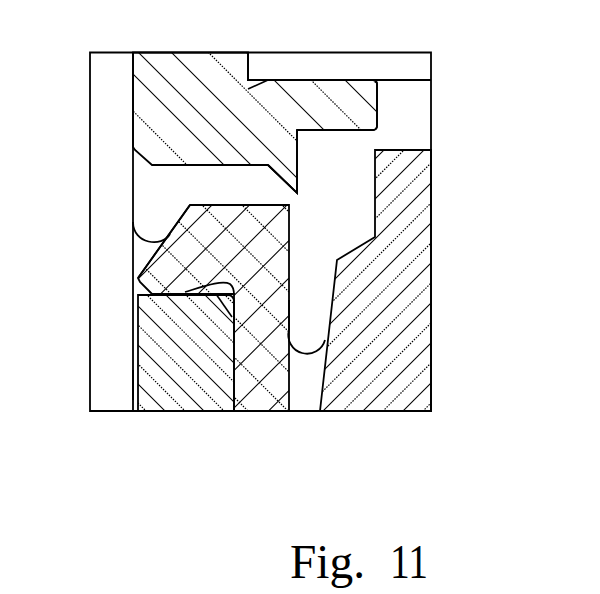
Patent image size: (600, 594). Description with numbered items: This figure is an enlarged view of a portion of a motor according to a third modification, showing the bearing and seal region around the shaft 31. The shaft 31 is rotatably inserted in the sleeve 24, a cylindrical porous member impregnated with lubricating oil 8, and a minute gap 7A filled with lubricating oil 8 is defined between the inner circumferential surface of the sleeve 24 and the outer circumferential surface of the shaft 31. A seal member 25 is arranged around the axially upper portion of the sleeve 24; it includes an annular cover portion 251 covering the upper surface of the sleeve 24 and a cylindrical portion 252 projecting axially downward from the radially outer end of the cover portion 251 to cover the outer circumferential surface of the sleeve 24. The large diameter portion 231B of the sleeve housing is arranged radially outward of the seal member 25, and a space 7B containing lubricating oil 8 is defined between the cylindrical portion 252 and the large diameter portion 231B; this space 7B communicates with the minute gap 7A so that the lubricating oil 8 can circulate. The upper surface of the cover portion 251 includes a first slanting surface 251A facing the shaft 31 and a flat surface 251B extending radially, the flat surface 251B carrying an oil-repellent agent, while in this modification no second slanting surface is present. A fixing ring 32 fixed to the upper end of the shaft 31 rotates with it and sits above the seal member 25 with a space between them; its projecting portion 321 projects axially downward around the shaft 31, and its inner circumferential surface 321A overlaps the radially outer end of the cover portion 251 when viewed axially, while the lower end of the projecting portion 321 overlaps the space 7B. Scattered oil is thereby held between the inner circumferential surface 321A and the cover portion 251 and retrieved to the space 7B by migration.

The shaft 31 is at (103, 60).
The fixing ring 32 is at (155, 58).
The projecting portion 321 is at (292, 178).
The inner circumferential surface 321A is at (277, 168).
The large diameter portion 231B is at (417, 410).
The seal member 25 is at (244, 320).
The cover portion 251 is at (244, 302).
The first slanting surface 251A is at (170, 233).
The flat surface 251B is at (193, 203).
The cylindrical portion 252 is at (187, 460).
The sleeve 24 is at (162, 409).
The lubricating oil 8 is at (143, 250).
The minute gap 7A is at (129, 382).
The space 7B is at (317, 331).